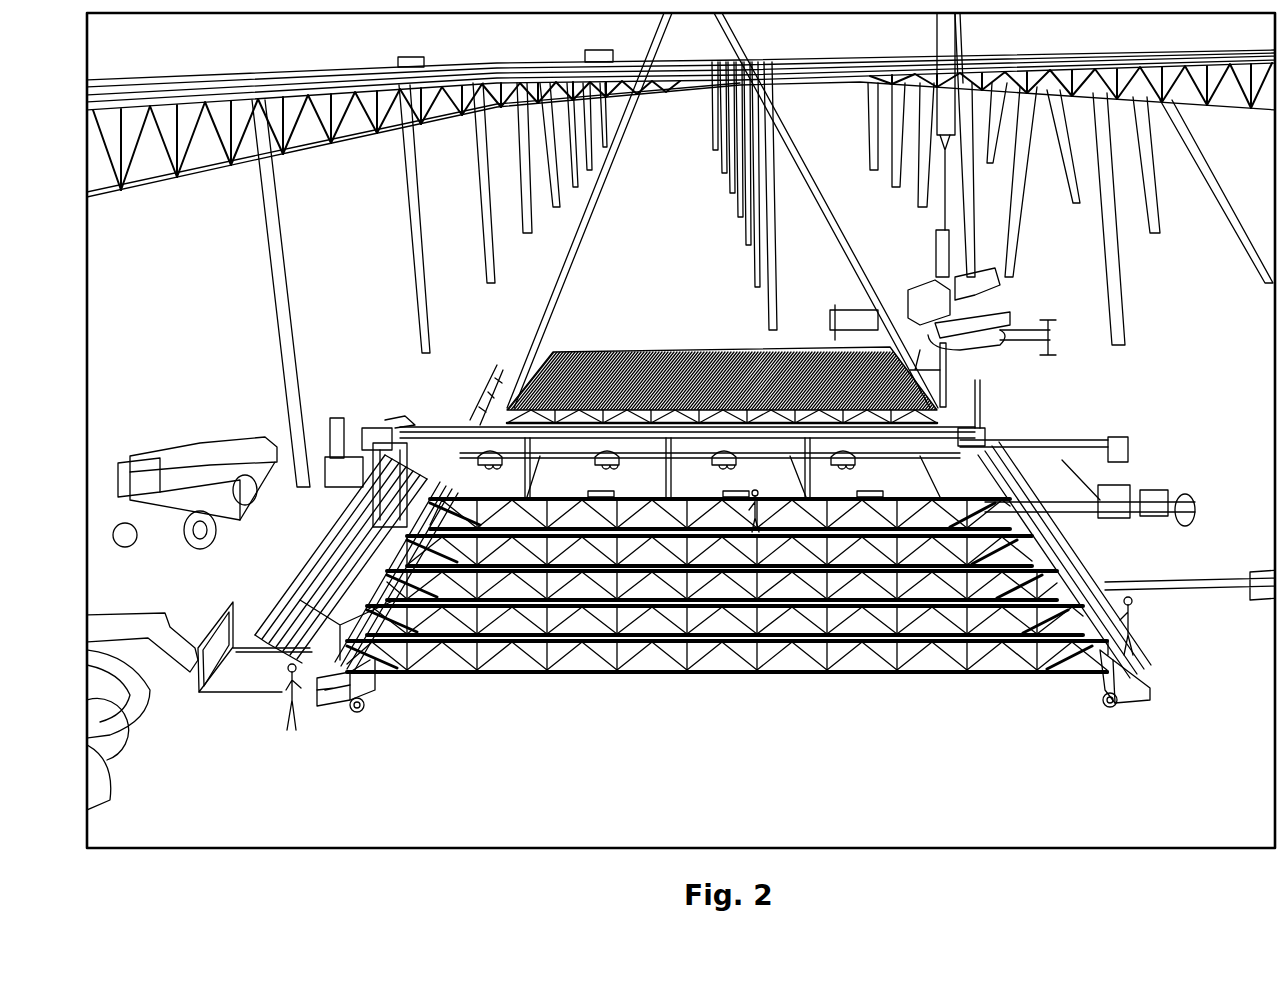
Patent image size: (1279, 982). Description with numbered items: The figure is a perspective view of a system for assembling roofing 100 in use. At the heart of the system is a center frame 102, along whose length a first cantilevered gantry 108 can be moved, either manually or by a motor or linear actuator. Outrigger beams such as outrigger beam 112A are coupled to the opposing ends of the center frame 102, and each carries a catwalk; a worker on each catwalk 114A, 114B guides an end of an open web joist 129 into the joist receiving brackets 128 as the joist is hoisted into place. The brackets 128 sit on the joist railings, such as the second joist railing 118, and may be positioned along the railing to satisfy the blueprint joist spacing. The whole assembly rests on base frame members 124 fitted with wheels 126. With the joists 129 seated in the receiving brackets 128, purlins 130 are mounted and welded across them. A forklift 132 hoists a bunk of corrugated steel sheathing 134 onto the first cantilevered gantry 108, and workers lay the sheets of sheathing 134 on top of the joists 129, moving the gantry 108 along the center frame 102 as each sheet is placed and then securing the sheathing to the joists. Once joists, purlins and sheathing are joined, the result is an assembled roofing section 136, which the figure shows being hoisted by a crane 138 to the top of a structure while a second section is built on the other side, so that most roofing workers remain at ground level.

The system for assembling roofing 100 is at (369, 306).
The center frame 102 is at (923, 430).
The first cantilevered gantry 108 is at (299, 512).
The outrigger beam 112A is at (373, 677).
The catwalk 114A is at (330, 667).
The catwalk 114B is at (1137, 675).
The second joist railing 118 is at (1045, 543).
The base frame member 124 is at (1182, 600).
The wheel 126 is at (1100, 700).
The joist receiving bracket 128 is at (1060, 530).
The open web joist 129 is at (1007, 673).
The purlin 130 is at (447, 665).
The forklift 132 is at (222, 687).
The corrugated steel sheathing 134 is at (300, 556).
The assembled roofing section 136 is at (693, 330).
The crane 138 is at (980, 303).